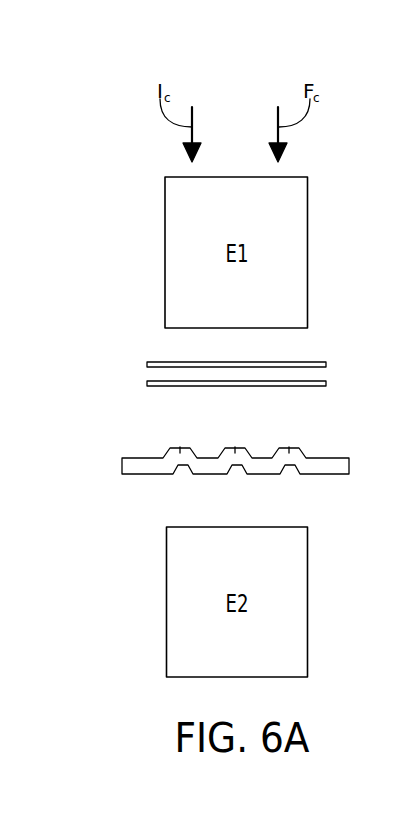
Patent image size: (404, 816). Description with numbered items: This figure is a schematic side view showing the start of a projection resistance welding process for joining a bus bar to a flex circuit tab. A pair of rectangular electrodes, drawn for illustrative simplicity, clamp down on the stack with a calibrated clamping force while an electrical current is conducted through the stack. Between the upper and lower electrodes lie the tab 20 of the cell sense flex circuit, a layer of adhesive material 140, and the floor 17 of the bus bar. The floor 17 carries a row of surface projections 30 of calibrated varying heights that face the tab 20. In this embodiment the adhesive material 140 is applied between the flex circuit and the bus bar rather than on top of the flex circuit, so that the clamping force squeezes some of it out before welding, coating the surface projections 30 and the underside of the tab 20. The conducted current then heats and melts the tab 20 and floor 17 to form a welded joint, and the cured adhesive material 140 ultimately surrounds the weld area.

The tab 20 is at (147, 364).
The adhesive material 140 is at (147, 384).
The floor 17 is at (138, 467).
The surface projections 30 is at (180, 452).